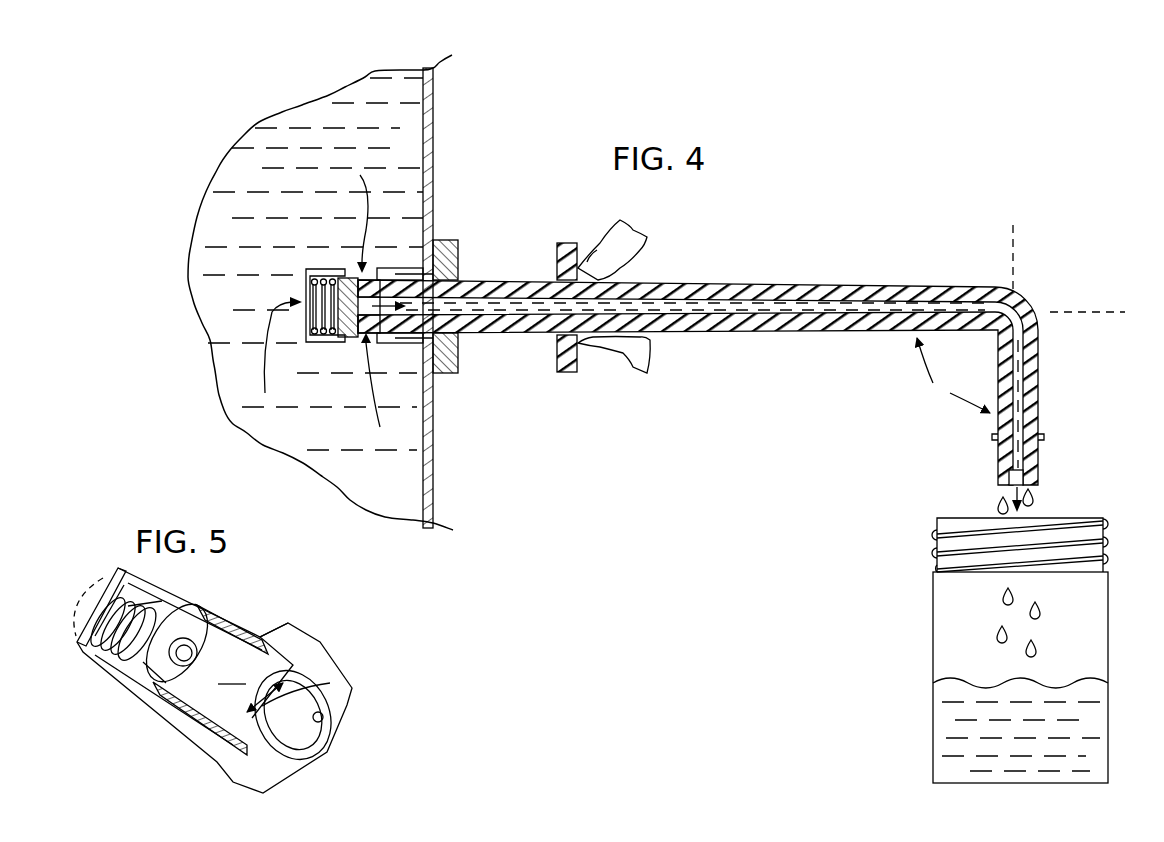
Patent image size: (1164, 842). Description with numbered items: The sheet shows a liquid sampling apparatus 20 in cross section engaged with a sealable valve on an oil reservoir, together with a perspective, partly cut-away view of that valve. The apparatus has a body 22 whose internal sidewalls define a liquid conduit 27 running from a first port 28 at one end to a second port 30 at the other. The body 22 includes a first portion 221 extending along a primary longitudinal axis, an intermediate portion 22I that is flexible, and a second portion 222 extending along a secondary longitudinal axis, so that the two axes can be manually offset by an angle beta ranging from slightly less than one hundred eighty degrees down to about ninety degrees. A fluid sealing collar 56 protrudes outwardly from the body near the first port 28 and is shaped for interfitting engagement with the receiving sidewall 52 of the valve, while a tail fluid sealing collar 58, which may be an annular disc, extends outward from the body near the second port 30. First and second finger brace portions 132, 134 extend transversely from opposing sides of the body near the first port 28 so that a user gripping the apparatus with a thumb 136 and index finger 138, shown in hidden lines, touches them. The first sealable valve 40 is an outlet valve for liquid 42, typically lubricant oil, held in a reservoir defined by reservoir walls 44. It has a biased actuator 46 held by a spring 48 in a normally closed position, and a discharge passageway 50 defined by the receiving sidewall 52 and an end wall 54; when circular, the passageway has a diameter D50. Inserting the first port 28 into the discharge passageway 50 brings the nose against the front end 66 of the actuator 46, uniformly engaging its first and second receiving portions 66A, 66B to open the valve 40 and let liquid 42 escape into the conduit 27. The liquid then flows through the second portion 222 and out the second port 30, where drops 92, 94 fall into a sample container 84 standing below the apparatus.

In FIG. 4, the liquid sampling apparatus 20 is at (730, 355).
In FIG. 4, the body 22 is at (755, 485).
In FIG. 4, the first portion of body 221 is at (738, 284).
In FIG. 4, the second portion of body 222 is at (1038, 404).
In FIG. 4, the intermediate portion of body 22I is at (1020, 302).
In FIG. 4, the liquid conduit 27 is at (750, 306).
In FIG. 4, the first port 28 is at (393, 318).
In FIG. 4, the second port 30 is at (1024, 471).
In FIG. 4, the first sealable valve 40 is at (445, 284).
In FIG. 5, the first sealable valve 40 is at (262, 620).
In FIG. 4, the liquid 42 is at (377, 101).
In FIG. 4, the reservoir walls 44 is at (433, 147).
In FIG. 4, the first sealable valve biased actuator 46 is at (351, 338).
In FIG. 5, the first sealable valve biased actuator 46 is at (130, 690).
In FIG. 4, the spring 48 is at (308, 281).
In FIG. 5, the spring 48 is at (105, 590).
In FIG. 5, the discharge passageway 50 is at (233, 672).
In FIG. 5, the receiving sidewall 52 is at (325, 706).
In FIG. 5, the end wall 54 is at (325, 722).
In FIG. 4, the fluid sealing collar 56 is at (437, 279).
In FIG. 4, the tail fluid sealing collar 58 is at (1044, 437).
In FIG. 5, the front end of biased actuator 66 is at (145, 700).
In FIG. 5, the first receiving portion 66A is at (184, 600).
In FIG. 5, the second receiving portion 66B is at (165, 710).
In FIG. 4, the sample container 84 is at (933, 623).
In FIG. 4, the drop 92 is at (1006, 497).
In FIG. 4, the drop 94 is at (1031, 495).
In FIG. 4, the first finger brace portion 132 is at (558, 244).
In FIG. 4, the second finger brace portion 134 is at (557, 372).
In FIG. 4, the thumb 136 is at (618, 220).
In FIG. 4, the index finger 138 is at (643, 367).
In FIG. 5, the diameter of discharge passageway D50 is at (275, 735).